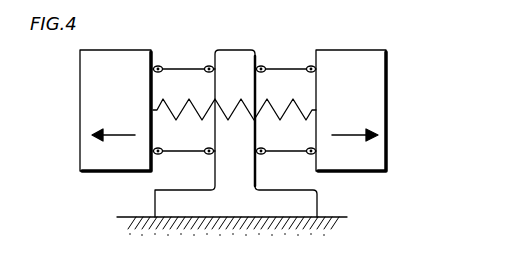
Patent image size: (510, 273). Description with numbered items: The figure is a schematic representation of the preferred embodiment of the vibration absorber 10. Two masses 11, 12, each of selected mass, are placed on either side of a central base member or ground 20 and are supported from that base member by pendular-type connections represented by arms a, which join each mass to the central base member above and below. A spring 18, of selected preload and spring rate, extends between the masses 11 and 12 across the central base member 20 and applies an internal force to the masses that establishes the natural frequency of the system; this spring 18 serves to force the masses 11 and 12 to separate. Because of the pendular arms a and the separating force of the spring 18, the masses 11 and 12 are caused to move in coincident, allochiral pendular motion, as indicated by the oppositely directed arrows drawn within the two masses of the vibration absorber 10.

The vibration absorber 10 is at (178, 39).
The mass 11 is at (116, 160).
The mass 12 is at (356, 160).
The spring 18 is at (267, 102).
The central base member 20 is at (232, 54).
The arm a is at (183, 57).